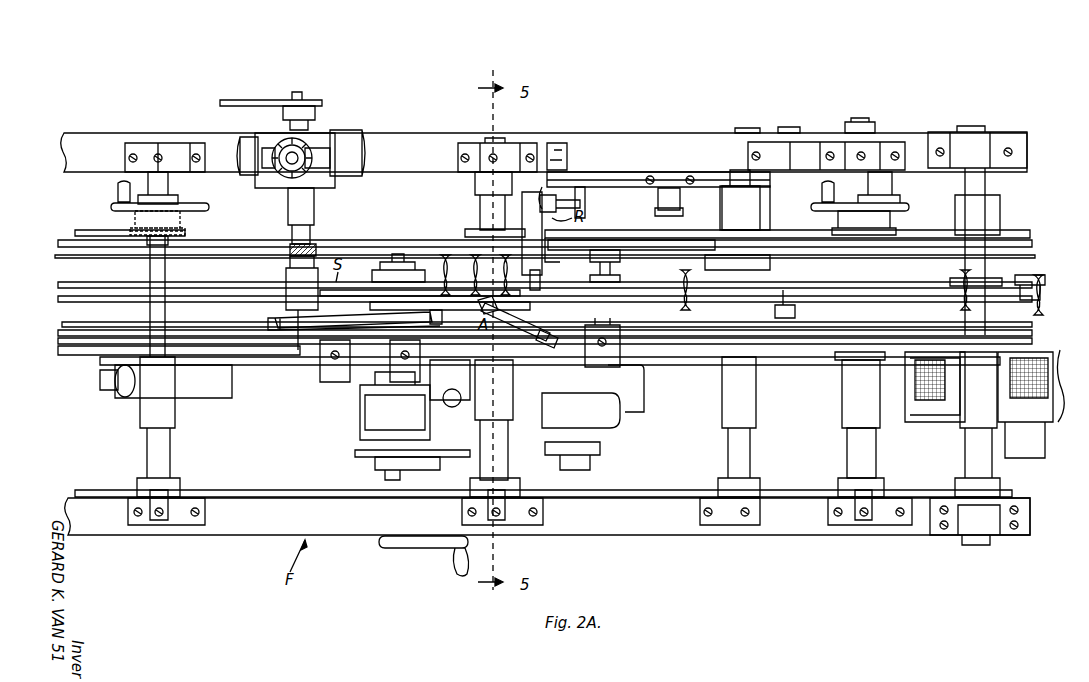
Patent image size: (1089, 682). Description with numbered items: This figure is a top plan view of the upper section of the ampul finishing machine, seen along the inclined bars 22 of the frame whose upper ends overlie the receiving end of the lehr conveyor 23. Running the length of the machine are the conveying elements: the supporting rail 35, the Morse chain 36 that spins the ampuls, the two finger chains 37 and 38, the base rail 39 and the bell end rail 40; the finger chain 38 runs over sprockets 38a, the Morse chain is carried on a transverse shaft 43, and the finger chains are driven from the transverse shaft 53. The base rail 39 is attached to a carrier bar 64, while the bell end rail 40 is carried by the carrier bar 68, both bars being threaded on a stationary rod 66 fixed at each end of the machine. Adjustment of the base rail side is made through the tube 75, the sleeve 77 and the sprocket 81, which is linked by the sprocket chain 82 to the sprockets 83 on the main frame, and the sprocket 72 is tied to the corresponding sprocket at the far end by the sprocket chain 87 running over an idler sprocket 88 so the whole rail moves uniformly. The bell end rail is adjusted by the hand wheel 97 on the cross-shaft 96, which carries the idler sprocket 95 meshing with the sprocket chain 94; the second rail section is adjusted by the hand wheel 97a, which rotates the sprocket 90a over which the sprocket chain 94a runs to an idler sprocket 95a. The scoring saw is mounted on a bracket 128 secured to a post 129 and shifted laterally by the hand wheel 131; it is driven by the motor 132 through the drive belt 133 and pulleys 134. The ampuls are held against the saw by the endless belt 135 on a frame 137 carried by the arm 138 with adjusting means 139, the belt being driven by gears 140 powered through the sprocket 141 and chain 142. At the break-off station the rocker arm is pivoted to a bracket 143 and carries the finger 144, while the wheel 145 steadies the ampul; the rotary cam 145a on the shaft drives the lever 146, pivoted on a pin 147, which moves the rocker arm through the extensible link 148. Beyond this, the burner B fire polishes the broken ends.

The inclined bars 22 is at (640, 146).
The lehr conveyor 23 is at (1062, 414).
The rail 35 is at (123, 280).
The endless chain 36 is at (68, 318).
The finger chain 37 is at (58, 299).
The finger chain 38 is at (58, 333).
The sprockets 38a is at (1017, 290).
The base rail 39 is at (60, 342).
The bell end rail 40 is at (75, 256).
The transverse shaft 43 is at (797, 306).
The transverse shaft 53 is at (740, 268).
The carrier bar 64 is at (80, 352).
The stationary rod 66 is at (863, 122).
The carrier bar 68 is at (58, 243).
The sprocket 72 is at (855, 360).
The tube 75 is at (842, 406).
The sleeve 77 is at (847, 442).
The sprocket 81 is at (838, 492).
The sprocket chain 82 is at (295, 492).
The sprockets 83 is at (1010, 492).
The sprocket chain 87 is at (274, 367).
The idler sprocket 88 is at (145, 380).
The sprocket 90a is at (898, 232).
The sprocket chain 94 is at (92, 230).
The sprocket chain 94a is at (628, 230).
The idler sprocket 95 is at (186, 230).
The idler sprocket 95a is at (520, 228).
The cross-shaft 96 is at (170, 184).
The hand wheel 97 is at (200, 203).
The hand wheel 97a is at (892, 203).
The bracket 128 is at (360, 400).
The post 129 is at (452, 389).
The hand wheel 131 is at (432, 548).
The motor 132 is at (610, 420).
The drive belt 133 is at (448, 450).
The pulleys 134 is at (375, 460).
The endless belt 135 is at (275, 316).
The frame 137 is at (300, 296).
The arm 138 is at (316, 203).
The adjusting means 139 is at (318, 246).
The gears 140 is at (295, 130).
The sprocket 141 is at (318, 103).
The chain 142 is at (272, 100).
The bracket 143 is at (560, 243).
The finger 144 is at (540, 262).
The wheel 145 is at (552, 325).
The rotary cam 145a is at (760, 190).
The lever 146 is at (605, 180).
The pin 147 is at (680, 198).
The extensible link 148 is at (582, 202).
The burner B is at (666, 276).